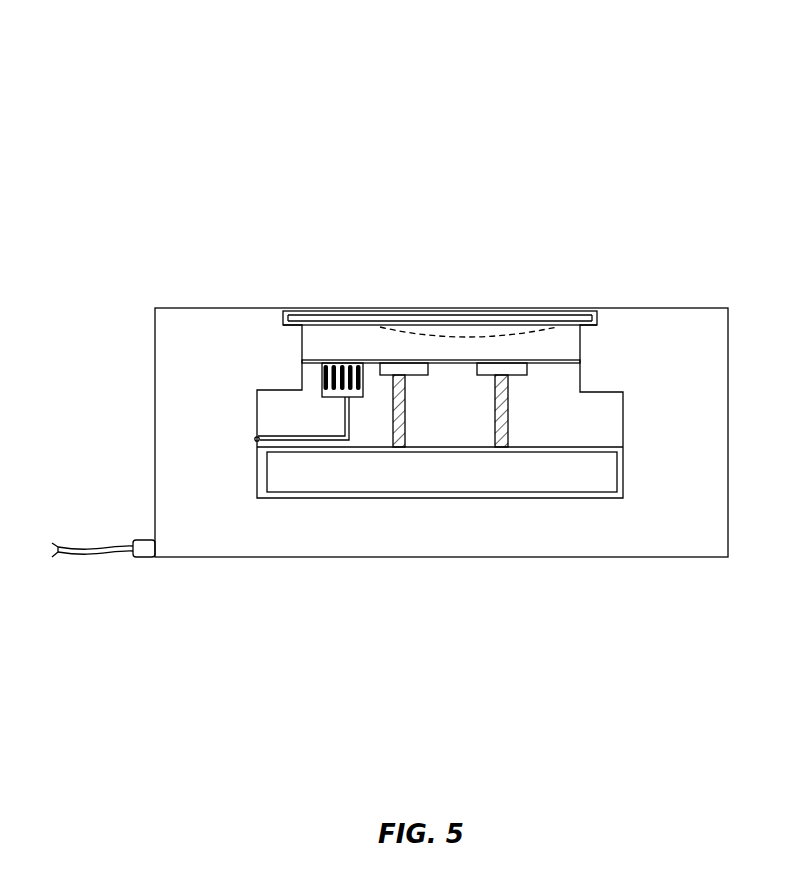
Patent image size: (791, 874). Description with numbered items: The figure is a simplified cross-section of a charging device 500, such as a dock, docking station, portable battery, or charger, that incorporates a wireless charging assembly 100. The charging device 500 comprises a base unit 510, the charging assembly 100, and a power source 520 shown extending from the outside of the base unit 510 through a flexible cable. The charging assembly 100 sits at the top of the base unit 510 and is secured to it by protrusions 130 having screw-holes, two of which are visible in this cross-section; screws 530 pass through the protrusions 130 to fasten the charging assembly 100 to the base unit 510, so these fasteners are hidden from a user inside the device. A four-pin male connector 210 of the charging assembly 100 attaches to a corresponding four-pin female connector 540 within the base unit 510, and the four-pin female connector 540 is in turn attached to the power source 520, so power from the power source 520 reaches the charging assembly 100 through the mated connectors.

The charging device 500 is at (592, 32).
The base unit 510 is at (673, 338).
The wireless charging assembly 100 is at (530, 315).
The protrusions 130 is at (428, 366).
The screws 530 is at (402, 427).
The four-pin male connector 210 is at (322, 368).
The four-pin female connector 540 is at (323, 397).
The power source 520 is at (147, 558).